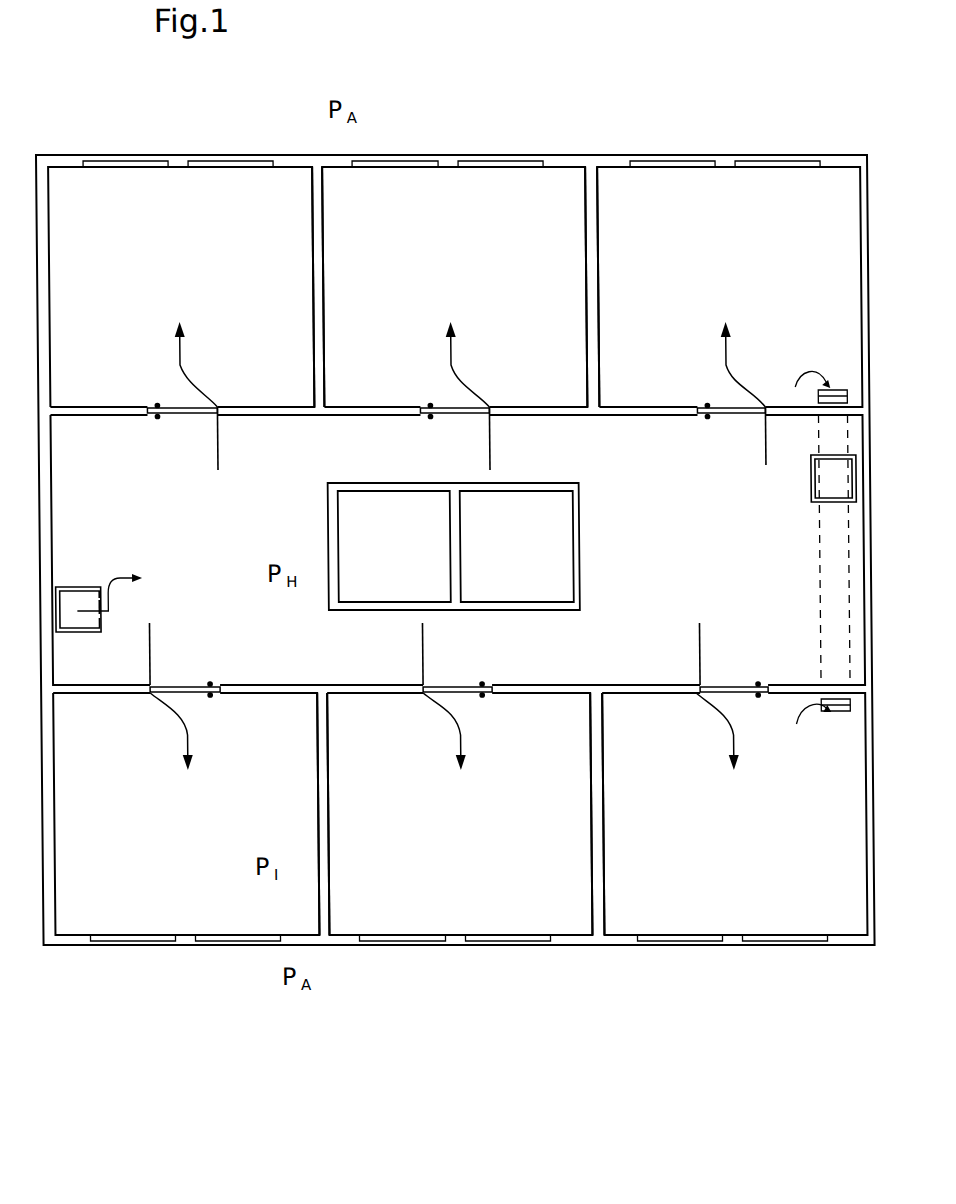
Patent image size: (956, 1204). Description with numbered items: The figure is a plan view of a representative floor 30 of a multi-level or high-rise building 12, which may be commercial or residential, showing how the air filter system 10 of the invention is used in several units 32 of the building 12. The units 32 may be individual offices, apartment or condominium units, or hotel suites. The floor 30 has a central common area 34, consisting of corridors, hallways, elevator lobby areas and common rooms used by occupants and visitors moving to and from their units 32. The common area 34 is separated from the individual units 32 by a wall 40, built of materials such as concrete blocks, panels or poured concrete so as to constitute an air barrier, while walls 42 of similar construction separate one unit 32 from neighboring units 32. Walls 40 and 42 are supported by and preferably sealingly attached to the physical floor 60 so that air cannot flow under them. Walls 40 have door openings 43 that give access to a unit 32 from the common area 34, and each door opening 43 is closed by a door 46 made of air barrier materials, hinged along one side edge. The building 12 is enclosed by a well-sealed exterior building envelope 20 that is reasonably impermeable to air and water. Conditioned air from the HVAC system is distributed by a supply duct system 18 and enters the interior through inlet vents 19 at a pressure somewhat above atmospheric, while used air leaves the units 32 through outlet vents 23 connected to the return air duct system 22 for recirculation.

The air filter system 10 is at (168, 372).
The building 12 is at (609, 125).
The supply duct system 18 is at (76, 587).
The inlet vents 19 is at (101, 620).
The exterior building envelope 20 is at (655, 152).
The return air duct system 22 is at (825, 502).
The outlet vents 23 is at (837, 388).
The floor 30 is at (489, 960).
The units 32 is at (189, 290).
The central common area 34 is at (639, 543).
The wall 40 is at (270, 403).
The walls 42 is at (322, 241).
The door openings 43 is at (187, 428).
The door 46 is at (174, 406).
The floor 60 is at (278, 526).